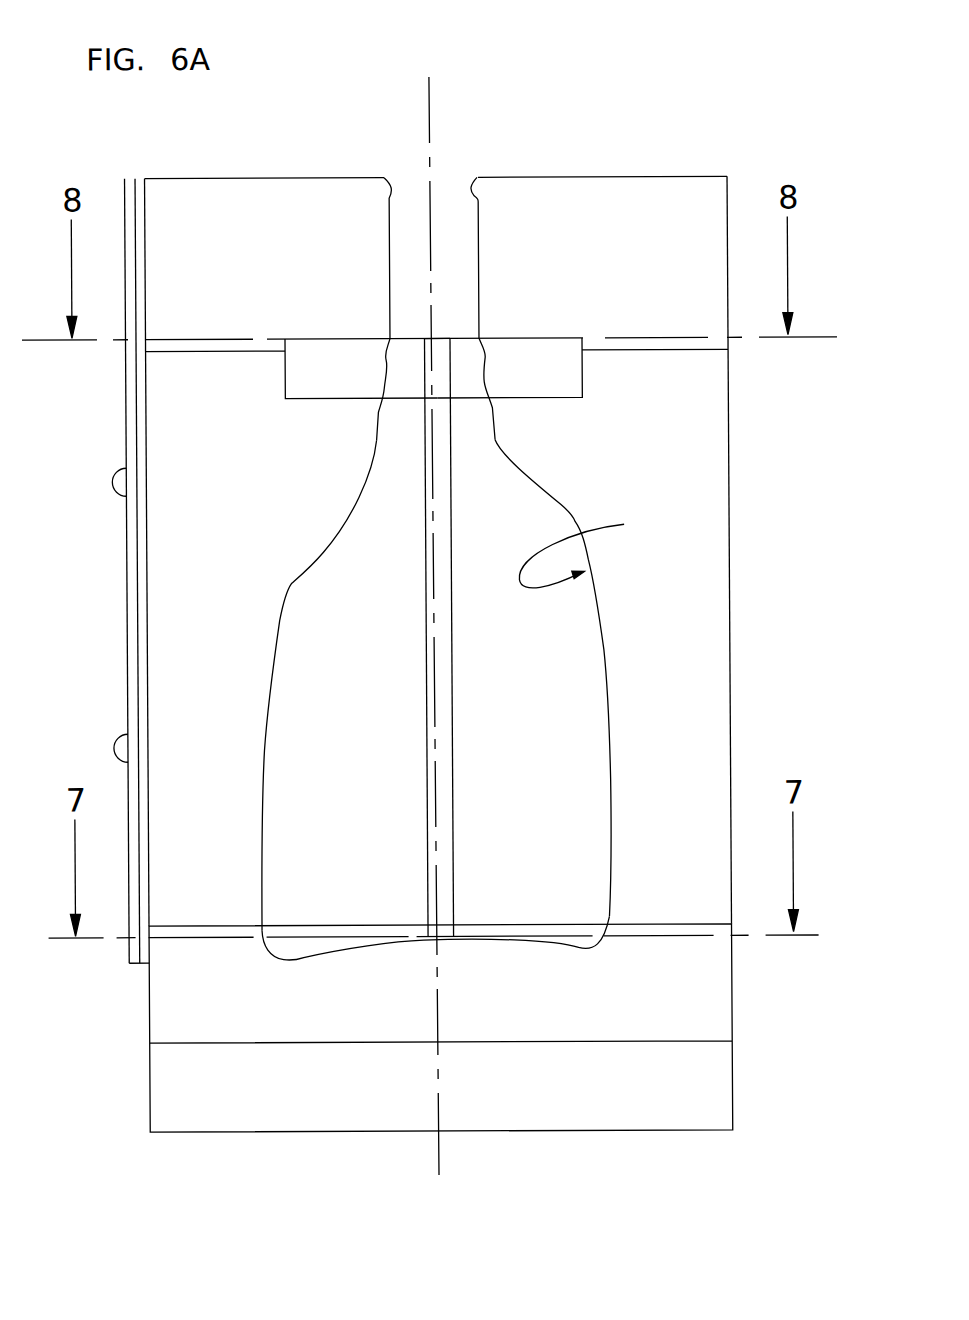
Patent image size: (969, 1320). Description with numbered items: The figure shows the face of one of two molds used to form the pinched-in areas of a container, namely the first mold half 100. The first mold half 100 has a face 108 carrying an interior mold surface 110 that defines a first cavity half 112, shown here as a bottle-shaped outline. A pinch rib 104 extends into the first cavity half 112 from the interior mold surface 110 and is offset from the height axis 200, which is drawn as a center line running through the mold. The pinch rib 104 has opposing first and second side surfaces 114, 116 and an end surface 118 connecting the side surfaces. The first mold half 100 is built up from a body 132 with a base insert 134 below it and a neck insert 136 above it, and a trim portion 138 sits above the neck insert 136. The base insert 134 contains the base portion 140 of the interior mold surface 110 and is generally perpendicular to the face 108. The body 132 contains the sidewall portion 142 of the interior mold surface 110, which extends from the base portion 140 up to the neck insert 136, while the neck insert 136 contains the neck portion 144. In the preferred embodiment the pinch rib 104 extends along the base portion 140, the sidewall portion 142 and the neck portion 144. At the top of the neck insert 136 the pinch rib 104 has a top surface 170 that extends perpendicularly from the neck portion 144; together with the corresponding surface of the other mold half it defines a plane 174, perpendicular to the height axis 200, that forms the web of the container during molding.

The first mold half 100 is at (583, 140).
The pinch rib 104 is at (419, 597).
The face 108 is at (713, 235).
The interior mold surface 110 is at (597, 551).
The first cavity half 112 is at (538, 683).
The first side surface 114 is at (451, 903).
The second side surface 116 is at (425, 912).
The end surface 118 is at (444, 840).
The body 132 is at (730, 632).
The base insert 134 is at (728, 1022).
The neck insert 136 is at (584, 372).
The trim portion 138 is at (729, 233).
The base portion 140 is at (293, 960).
The sidewall portion 142 is at (278, 620).
The neck portion 144 is at (386, 366).
The top surface 170 is at (433, 338).
The plane 174 is at (767, 340).
The height axis 200 is at (431, 139).